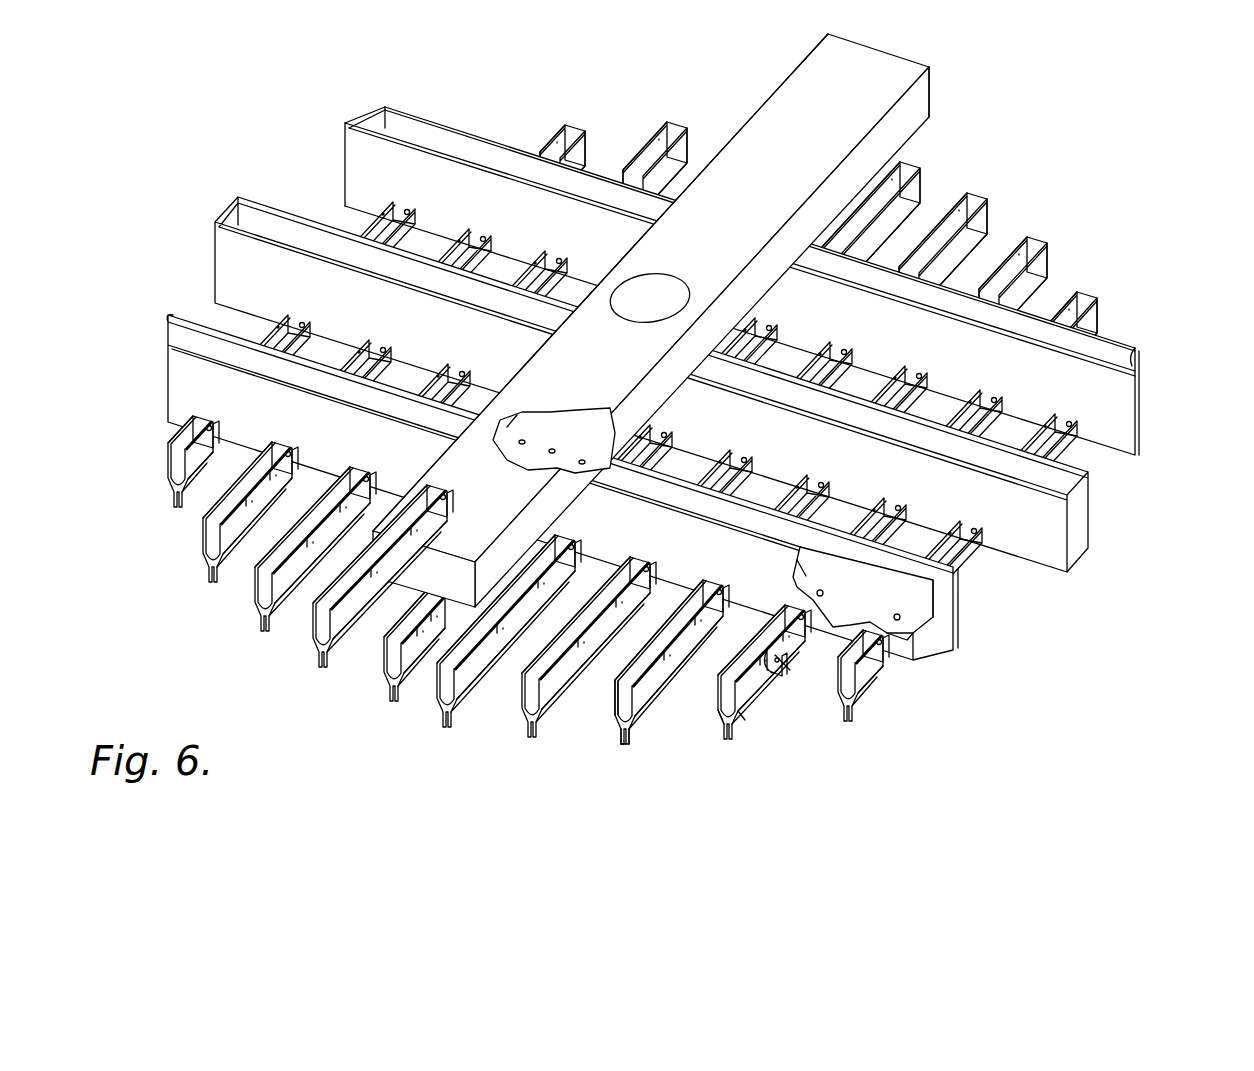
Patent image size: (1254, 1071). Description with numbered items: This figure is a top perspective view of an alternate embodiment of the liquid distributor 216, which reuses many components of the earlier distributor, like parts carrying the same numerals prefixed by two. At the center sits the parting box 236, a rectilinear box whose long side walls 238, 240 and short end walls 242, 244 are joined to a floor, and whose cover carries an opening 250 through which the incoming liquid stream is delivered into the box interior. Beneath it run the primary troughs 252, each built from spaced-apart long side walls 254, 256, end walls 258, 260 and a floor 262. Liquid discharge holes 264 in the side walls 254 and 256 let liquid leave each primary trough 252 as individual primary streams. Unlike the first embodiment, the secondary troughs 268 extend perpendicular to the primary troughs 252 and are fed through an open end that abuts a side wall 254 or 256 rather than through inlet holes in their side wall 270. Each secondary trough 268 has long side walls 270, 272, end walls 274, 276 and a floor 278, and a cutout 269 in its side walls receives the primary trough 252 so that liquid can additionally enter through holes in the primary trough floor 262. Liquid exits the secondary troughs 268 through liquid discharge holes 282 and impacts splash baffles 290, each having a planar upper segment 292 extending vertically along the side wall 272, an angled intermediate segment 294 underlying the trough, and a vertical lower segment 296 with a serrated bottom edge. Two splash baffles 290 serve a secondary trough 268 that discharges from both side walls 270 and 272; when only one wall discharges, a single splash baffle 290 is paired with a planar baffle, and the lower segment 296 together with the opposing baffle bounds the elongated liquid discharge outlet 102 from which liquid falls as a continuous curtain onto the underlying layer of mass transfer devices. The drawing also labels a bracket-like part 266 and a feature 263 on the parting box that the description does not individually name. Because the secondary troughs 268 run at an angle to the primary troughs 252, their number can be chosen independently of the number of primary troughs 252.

The liquid discharge outlet 102 is at (632, 762).
The liquid distributor 216 is at (778, 77).
The parting box 236 is at (846, 70).
The side wall of parting box 238 is at (522, 412).
The side wall of parting box 240 is at (920, 110).
The end side wall of parting box 242 is at (935, 80).
The end side wall of parting box 244 is at (398, 548).
The opening in cover 250 is at (662, 284).
The primary trough 252 is at (418, 104).
The side wall of primary trough 254 is at (1086, 345).
The side wall of primary trough 256 is at (1108, 385).
The end side wall of primary trough 258 is at (376, 118).
The end side wall of primary trough 260 is at (1138, 352).
The floor of primary trough 262 is at (920, 630).
The slots in mounting plate 263 is at (582, 460).
The liquid discharge holes 264 is at (935, 607).
The hanger bracket 266 is at (836, 575).
The secondary trough 268 is at (787, 652).
The cutout 269 is at (578, 540).
The side wall of secondary trough 270 is at (776, 648).
The side wall of secondary trough 272 is at (776, 660).
The end side wall of secondary trough 274 is at (753, 673).
The end side wall of secondary trough 276 is at (1082, 300).
The floor of secondary trough 278 is at (742, 712).
The liquid discharge holes of secondary trough 282 is at (720, 705).
The splash baffle 290 is at (617, 740).
The upper segment of splash baffle 292 is at (608, 700).
The intermediate segment of splash baffle 294 is at (613, 722).
The lower segment of splash baffle 296 is at (622, 757).